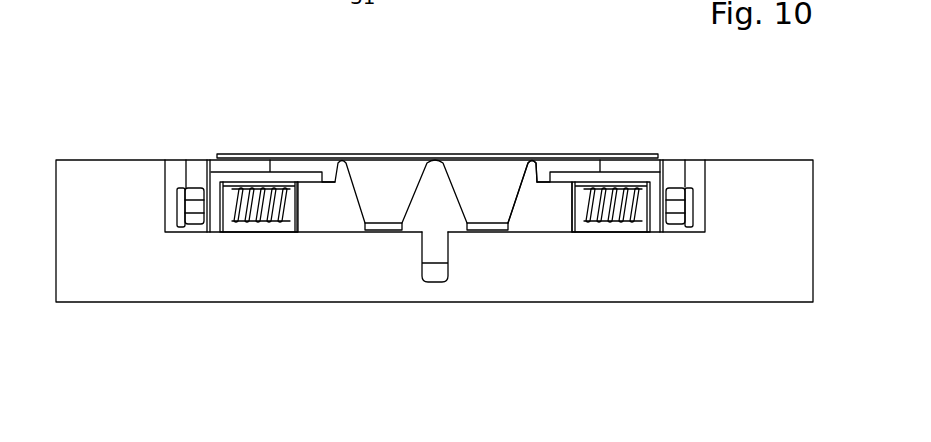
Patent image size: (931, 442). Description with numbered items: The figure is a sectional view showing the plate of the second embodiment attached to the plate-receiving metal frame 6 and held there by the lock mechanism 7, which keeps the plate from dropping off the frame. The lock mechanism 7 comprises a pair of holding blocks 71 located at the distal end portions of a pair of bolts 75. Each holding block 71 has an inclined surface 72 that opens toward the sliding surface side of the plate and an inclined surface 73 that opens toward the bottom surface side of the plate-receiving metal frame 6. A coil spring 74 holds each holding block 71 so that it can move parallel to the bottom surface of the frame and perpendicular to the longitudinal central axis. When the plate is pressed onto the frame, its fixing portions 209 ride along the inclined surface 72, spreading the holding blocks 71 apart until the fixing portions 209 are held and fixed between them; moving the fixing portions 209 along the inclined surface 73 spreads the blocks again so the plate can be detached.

The plate-receiving metal frame 6 is at (753, 180).
The lock mechanism 7 is at (323, 148).
The holding block 71 is at (327, 220).
The inclined surface 72 is at (518, 180).
The inclined surface 73 is at (507, 233).
The coil spring 74 is at (615, 185).
The bolt 75 is at (247, 228).
The fixing portion 209 is at (383, 232).